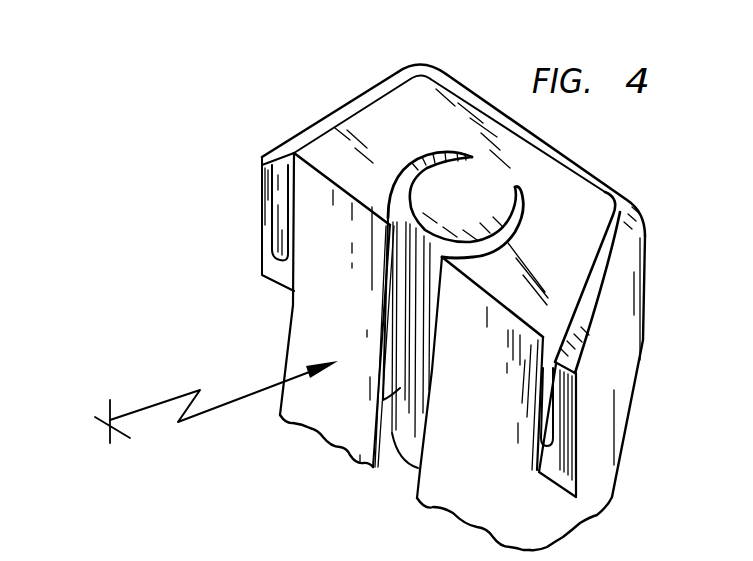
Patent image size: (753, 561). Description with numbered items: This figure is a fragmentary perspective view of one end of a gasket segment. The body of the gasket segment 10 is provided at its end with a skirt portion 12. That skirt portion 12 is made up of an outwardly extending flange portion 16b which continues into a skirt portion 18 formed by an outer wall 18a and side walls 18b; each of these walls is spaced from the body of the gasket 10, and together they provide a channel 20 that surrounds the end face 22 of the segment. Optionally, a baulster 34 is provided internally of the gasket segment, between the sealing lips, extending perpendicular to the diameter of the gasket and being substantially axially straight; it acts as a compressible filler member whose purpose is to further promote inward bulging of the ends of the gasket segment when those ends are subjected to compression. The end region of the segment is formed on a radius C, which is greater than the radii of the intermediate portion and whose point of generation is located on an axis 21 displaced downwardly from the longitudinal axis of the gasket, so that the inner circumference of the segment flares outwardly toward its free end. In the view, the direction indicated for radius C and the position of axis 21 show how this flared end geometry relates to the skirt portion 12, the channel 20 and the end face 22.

The body of the gasket segment 10 is at (627, 475).
The skirt portion 12 is at (644, 244).
The flange portion 16b is at (276, 286).
The skirt portion 18 is at (636, 354).
The outer wall 18a is at (466, 88).
The side walls 18b is at (325, 121).
The channel 20 is at (288, 212).
The reference point 21 is at (108, 416).
The end face 22 is at (436, 82).
The baulster 34 is at (473, 193).
The radius C is at (176, 398).